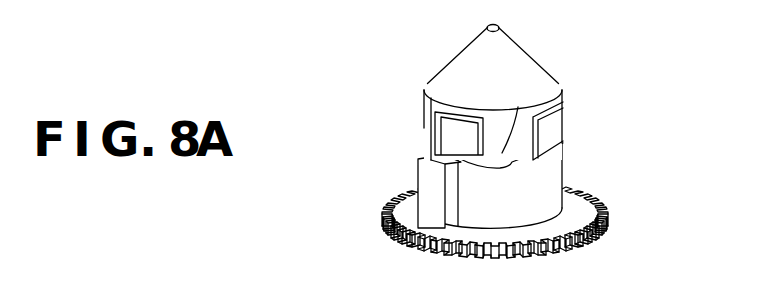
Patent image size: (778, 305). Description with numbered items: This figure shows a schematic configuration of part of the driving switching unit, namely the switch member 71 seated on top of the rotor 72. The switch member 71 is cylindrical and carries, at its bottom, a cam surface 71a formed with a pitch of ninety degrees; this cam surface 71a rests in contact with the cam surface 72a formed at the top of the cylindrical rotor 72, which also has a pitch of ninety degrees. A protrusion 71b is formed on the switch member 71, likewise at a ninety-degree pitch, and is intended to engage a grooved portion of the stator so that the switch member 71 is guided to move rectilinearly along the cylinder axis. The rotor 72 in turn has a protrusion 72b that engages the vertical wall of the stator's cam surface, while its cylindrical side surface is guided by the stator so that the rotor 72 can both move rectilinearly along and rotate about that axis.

The switch member 71 is at (645, 15).
The cam surface 71a is at (518, 107).
The protrusion 71b is at (553, 124).
The rotor 72 is at (337, 142).
The cam surface 72a is at (492, 163).
The protrusion 72b is at (428, 193).